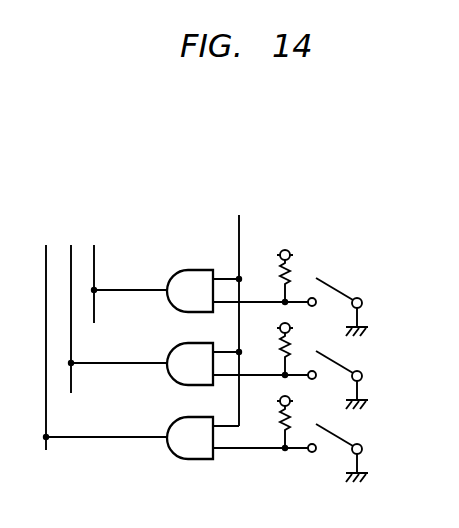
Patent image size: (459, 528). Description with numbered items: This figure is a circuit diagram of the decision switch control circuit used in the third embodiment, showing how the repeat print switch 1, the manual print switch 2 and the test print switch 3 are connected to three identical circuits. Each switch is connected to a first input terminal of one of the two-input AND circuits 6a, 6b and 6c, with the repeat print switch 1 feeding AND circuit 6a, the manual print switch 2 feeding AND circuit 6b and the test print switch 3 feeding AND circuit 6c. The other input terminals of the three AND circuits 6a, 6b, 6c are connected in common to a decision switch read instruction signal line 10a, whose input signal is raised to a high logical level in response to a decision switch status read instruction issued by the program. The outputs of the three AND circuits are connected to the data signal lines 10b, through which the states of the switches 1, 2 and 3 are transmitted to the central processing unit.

The decision switch read instruction signal line 10a is at (239, 224).
The data signal lines 10b is at (115, 227).
The two-input AND circuit 6a is at (196, 270).
The two-input AND circuit 6b is at (171, 380).
The two-input AND circuit 6c is at (176, 456).
The repeat print switch 1 is at (362, 299).
The manual print switch 2 is at (362, 372).
The test print switch 3 is at (362, 445).